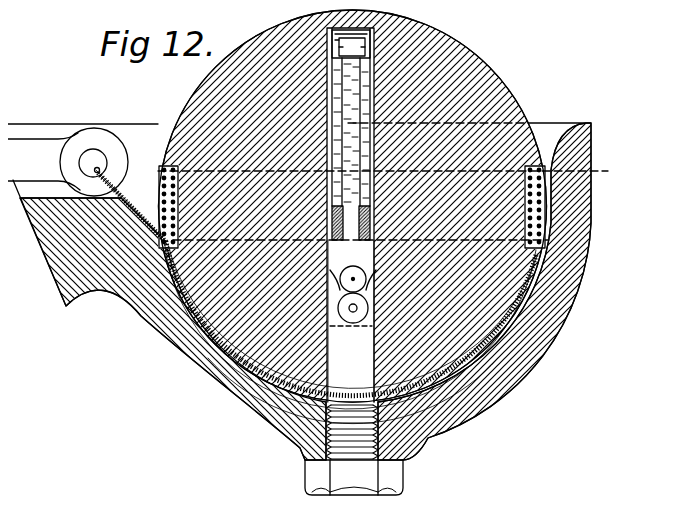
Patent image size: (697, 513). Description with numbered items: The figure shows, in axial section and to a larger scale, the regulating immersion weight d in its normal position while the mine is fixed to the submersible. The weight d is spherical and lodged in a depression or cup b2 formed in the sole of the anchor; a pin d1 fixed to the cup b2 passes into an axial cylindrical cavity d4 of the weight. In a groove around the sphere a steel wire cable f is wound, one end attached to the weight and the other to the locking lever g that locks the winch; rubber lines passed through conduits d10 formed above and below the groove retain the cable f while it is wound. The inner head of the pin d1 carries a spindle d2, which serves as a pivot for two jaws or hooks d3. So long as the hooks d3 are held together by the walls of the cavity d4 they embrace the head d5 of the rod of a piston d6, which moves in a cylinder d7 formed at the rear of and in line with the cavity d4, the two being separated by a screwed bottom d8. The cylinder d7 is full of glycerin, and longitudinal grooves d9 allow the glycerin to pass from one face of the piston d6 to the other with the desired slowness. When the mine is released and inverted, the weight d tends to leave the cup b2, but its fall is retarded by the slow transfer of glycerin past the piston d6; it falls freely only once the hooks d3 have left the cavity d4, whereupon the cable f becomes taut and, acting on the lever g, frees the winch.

The locking lever g is at (28, 145).
The regulating weight d is at (484, 102).
The pin d1 is at (405, 382).
The spindle d2 is at (345, 300).
The jaws or hooks d3 is at (367, 283).
The axial cylindrical cavity d4 is at (328, 250).
The head of the piston rod d5 is at (325, 290).
The piston d6 is at (350, 42).
The cylinder d7 is at (358, 96).
The screwed bottom d8 is at (360, 215).
The longitudinal grooves d9 is at (340, 87).
The conduits d10 is at (540, 160).
The cable f is at (352, 368).
The depression or cup b2 is at (452, 415).